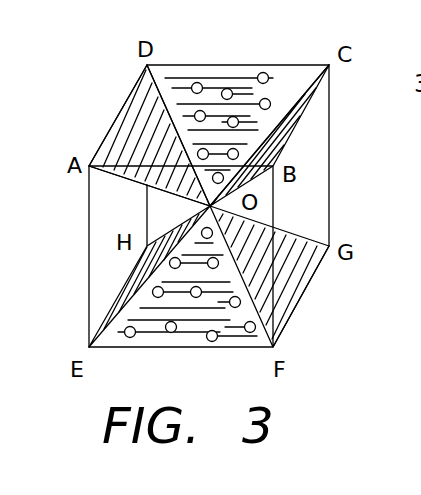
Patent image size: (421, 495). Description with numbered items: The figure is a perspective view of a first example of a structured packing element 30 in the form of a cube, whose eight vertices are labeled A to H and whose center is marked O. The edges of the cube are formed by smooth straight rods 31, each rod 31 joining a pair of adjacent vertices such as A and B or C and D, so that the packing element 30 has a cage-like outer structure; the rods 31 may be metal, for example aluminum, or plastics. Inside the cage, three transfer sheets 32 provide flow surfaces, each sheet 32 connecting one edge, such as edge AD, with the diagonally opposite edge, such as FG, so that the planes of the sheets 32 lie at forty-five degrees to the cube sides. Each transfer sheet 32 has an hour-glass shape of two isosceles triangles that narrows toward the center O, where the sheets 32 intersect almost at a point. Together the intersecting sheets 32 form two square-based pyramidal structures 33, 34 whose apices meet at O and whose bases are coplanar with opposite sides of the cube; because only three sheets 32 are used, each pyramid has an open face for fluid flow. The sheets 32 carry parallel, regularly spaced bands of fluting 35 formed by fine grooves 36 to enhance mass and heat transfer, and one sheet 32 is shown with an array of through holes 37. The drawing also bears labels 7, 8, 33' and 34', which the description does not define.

The structured packing element 30 is at (316, 22).
The rods 31 is at (240, 65).
The transfer sheets 32 is at (113, 137).
The hatched layer lines 7 is at (138, 130).
The apertures or through holes 37 is at (199, 82).
The pyramidal structure 33 is at (296, 135).
The hidden counterpart of wedge section 33 33' is at (111, 193).
The pyramidal structure 34 is at (280, 276).
The hidden counterpart of section 34 34' is at (299, 220).
The lower left hatched wedge section 8 is at (152, 292).
The bands of fluting 35 is at (150, 360).
The grooves 36 is at (238, 330).